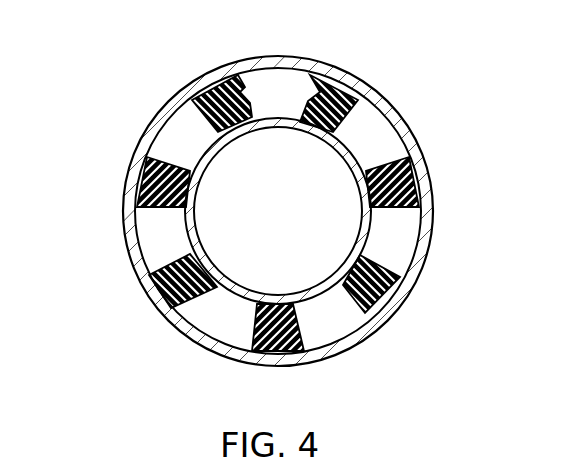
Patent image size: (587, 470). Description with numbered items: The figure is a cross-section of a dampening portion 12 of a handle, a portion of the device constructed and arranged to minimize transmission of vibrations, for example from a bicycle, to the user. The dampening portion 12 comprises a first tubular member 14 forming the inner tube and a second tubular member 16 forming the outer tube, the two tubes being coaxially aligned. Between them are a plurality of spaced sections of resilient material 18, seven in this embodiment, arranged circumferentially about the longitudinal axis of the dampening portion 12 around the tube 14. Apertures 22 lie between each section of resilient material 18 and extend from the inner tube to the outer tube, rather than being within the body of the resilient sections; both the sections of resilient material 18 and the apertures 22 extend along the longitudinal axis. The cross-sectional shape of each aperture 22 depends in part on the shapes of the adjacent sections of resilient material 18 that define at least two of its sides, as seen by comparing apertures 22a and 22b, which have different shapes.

The dampening portion 12 is at (128, 100).
The first tubular member 14 is at (352, 247).
The second tubular member 16 is at (405, 113).
The section of resilient material 18 is at (175, 296).
The aperture 22 is at (215, 332).
The aperture 22a is at (408, 238).
The aperture 22b is at (283, 78).